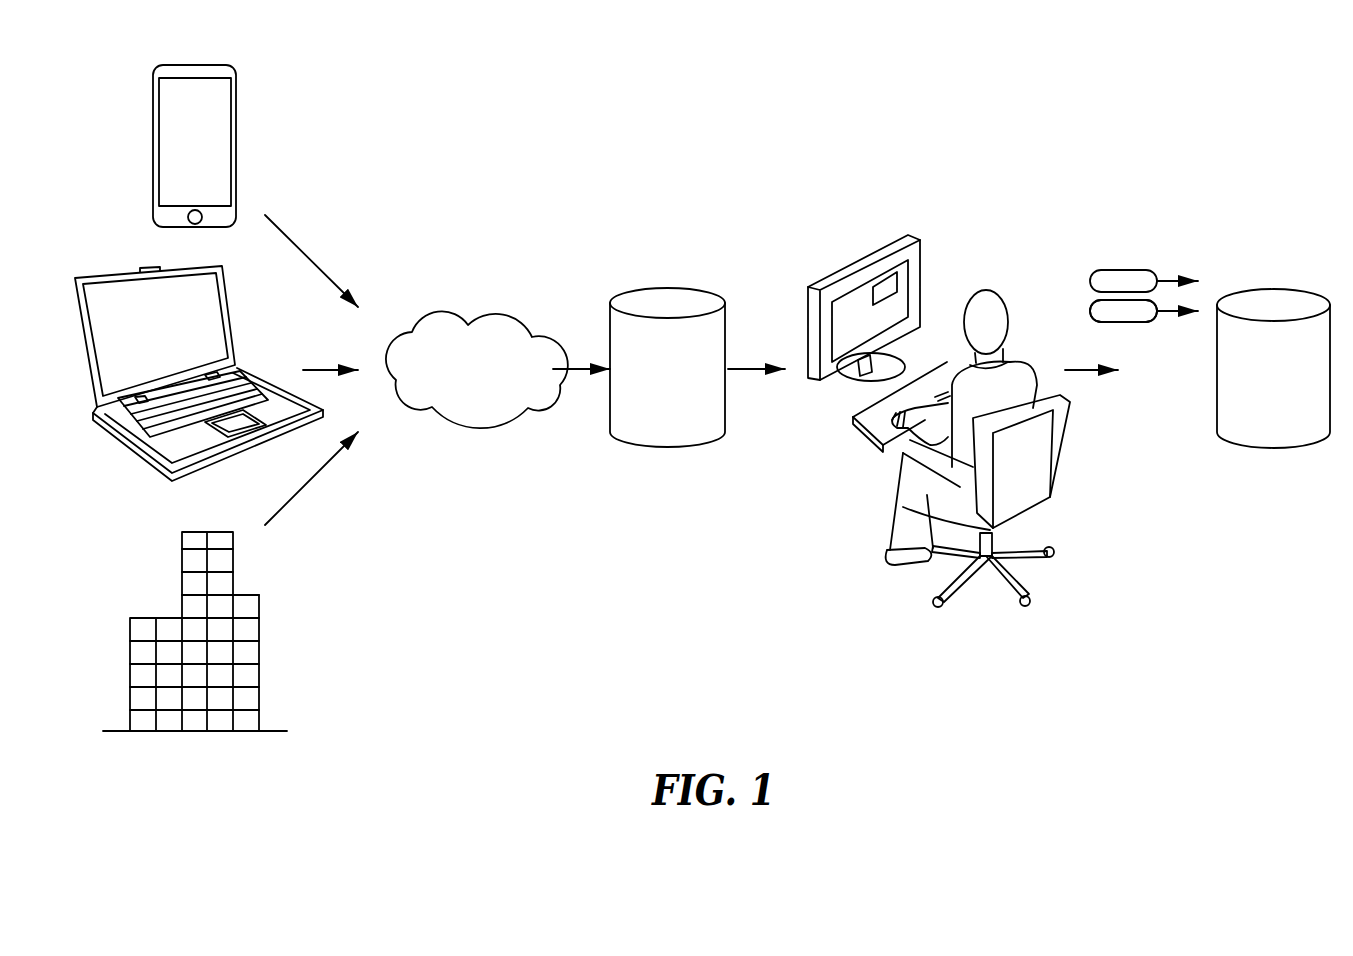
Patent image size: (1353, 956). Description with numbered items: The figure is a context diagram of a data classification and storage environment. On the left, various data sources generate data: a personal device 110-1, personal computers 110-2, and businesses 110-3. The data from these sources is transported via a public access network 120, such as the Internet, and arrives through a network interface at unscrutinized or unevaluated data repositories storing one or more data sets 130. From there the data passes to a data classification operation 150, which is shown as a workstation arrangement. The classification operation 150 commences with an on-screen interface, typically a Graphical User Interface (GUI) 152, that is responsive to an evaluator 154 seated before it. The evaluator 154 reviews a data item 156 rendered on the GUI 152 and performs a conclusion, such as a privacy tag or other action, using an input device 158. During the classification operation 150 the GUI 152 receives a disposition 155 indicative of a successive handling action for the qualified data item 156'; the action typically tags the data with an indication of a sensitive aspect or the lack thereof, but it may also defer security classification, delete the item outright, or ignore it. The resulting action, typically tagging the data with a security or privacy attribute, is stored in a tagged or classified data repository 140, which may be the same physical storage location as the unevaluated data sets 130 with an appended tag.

The personal device 110-1 is at (236, 102).
The personal computers 110-2 is at (108, 432).
The businesses 110-3 is at (259, 650).
The public access network 120 is at (453, 383).
The data sets 130 is at (688, 383).
The tagged or classified data repository 140 is at (1294, 385).
The data classification operation 150 is at (935, 628).
The Graphical User Interface (GUI) 152 is at (853, 285).
The evaluator 154 is at (981, 290).
The disposition 155 is at (1135, 270).
The data item 156 is at (888, 247).
The qualified data item 156' is at (1139, 343).
The input device 158 is at (850, 423).